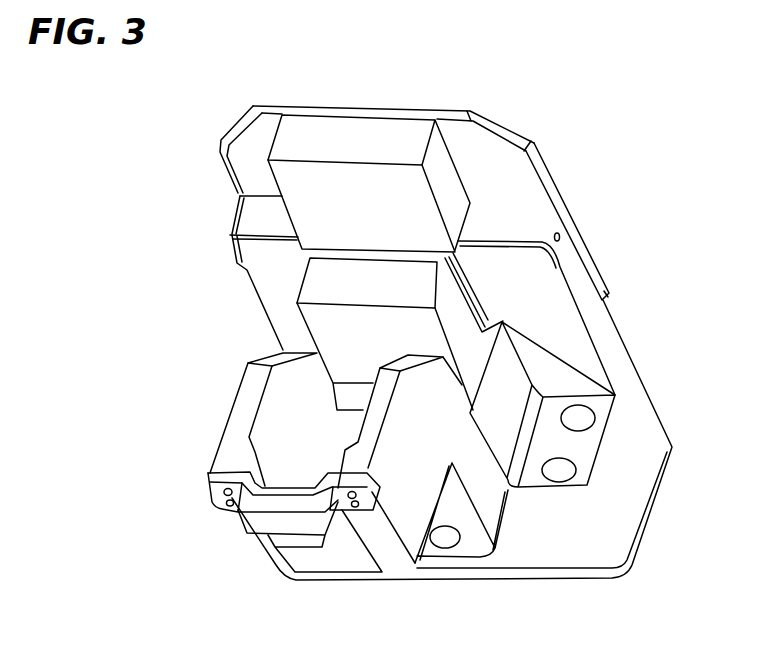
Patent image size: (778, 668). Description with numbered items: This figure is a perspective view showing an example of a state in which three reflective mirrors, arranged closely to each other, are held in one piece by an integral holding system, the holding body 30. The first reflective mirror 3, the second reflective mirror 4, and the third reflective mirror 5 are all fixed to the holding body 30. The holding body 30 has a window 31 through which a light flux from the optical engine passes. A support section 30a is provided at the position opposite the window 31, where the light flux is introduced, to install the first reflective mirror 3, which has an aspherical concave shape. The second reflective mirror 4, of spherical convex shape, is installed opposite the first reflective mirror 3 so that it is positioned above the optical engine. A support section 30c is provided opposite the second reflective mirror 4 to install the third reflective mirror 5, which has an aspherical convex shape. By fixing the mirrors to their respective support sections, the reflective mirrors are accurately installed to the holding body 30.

The first reflective mirror 3 is at (465, 352).
The second reflective mirror 4 is at (293, 540).
The third reflective mirror 5 is at (447, 183).
The holding body 30 is at (630, 513).
The support section 30a is at (463, 350).
The support section 30c is at (558, 197).
The window 31 is at (353, 560).